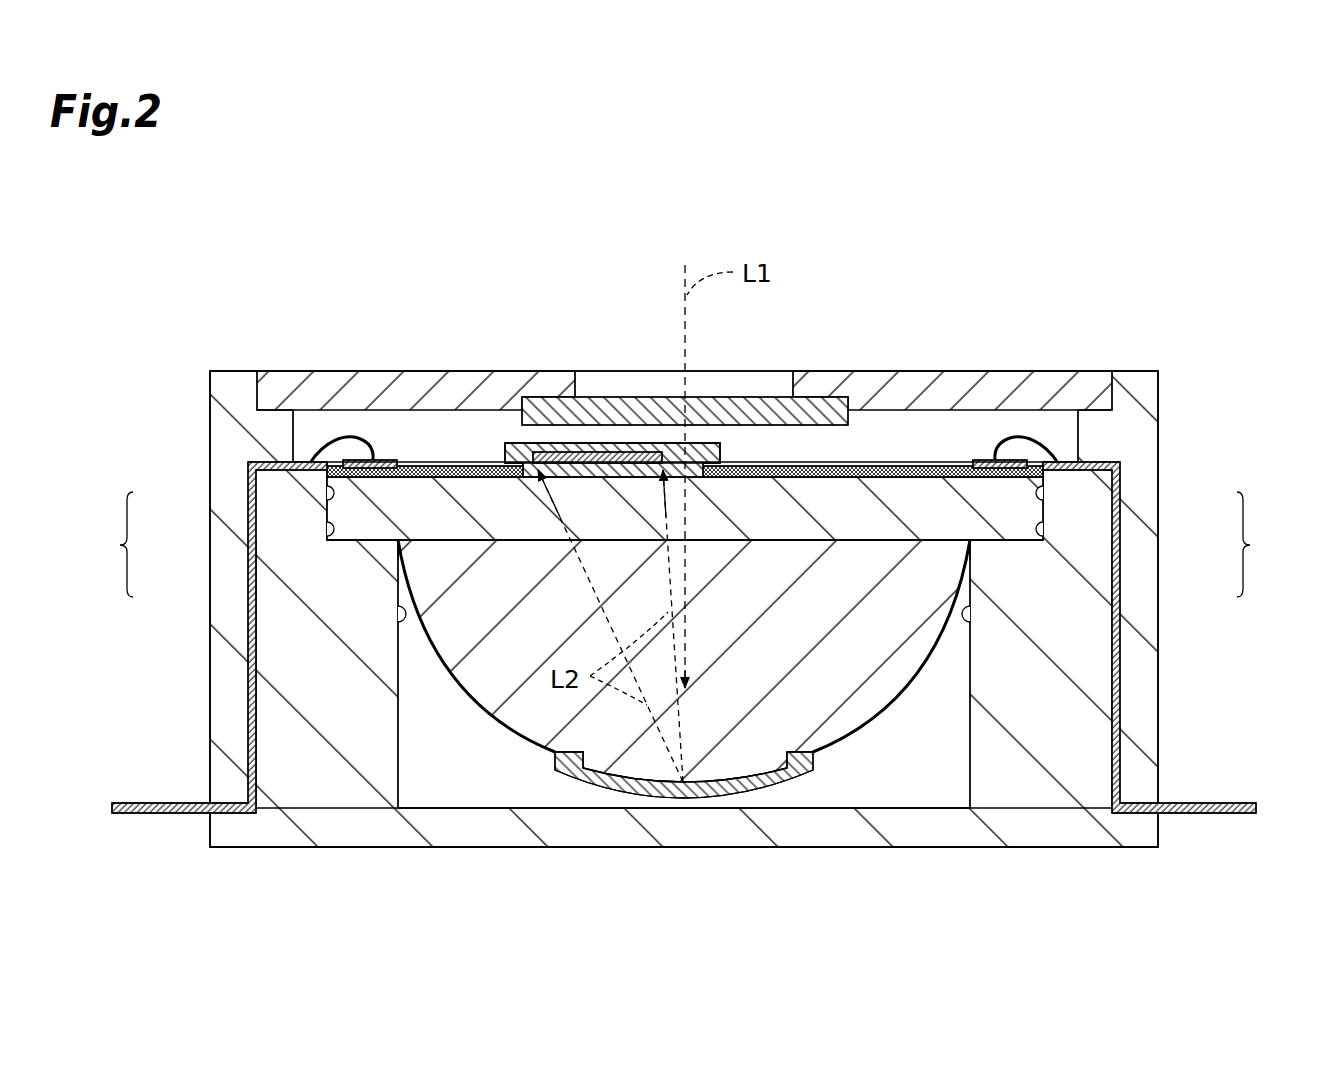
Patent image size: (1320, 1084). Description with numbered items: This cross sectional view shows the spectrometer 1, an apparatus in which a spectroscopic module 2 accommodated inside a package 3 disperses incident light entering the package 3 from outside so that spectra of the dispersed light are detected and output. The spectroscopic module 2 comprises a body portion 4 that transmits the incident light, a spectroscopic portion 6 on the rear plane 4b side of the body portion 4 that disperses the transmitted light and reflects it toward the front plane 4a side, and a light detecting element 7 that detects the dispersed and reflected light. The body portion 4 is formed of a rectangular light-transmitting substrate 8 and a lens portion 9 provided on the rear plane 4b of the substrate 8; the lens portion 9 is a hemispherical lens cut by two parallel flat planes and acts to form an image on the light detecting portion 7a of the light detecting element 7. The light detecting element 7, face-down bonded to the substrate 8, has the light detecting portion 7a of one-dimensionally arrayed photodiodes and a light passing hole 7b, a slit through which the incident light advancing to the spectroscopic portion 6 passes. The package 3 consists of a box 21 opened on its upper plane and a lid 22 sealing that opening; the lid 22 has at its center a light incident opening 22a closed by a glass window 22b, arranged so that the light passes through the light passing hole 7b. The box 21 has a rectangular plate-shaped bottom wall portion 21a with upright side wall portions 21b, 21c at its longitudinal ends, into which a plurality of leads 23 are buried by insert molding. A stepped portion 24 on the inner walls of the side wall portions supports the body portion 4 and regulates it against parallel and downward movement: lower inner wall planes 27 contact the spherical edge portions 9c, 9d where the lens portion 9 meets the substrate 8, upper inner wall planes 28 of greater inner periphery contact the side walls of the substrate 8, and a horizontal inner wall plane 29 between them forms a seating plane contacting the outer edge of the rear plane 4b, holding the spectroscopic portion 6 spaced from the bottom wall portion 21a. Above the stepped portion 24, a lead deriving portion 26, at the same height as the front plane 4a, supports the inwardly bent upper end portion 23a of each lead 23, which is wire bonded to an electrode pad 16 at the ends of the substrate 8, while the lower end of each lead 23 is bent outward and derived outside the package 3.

The spectrometer 1 is at (1226, 281).
The spectroscopic module 2 is at (915, 444).
The package 3 is at (188, 376).
The body portion 4 is at (963, 738).
The front plane 4a is at (860, 467).
The rear plane 4b is at (795, 556).
The spectroscopic portion 6 is at (809, 773).
The light detecting element 7 is at (492, 433).
The light detecting portion 7a is at (580, 452).
The light passing hole 7b is at (690, 447).
The substrate 8 is at (905, 532).
The lens portion 9 is at (882, 657).
The spherical edge portion 9c is at (394, 546).
The spherical edge portion 9d is at (976, 546).
The electrode pad 16 is at (385, 460).
The box 21 is at (1164, 441).
The bottom wall portion 21a is at (727, 835).
The side wall portion 21b is at (278, 640).
The side wall portion 21c is at (1095, 640).
The lid 22 is at (1100, 390).
The light incident opening 22a is at (794, 385).
The glass window 22b is at (622, 397).
The lead 23 is at (248, 735).
The upper end portion 23a is at (320, 462).
The stepped portion 24 is at (686, 544).
The lead deriving portion 26 is at (338, 452).
The inner wall plane 27 is at (398, 612).
The inner wall plane 28 is at (327, 493).
The inner wall plane 29 is at (327, 527).